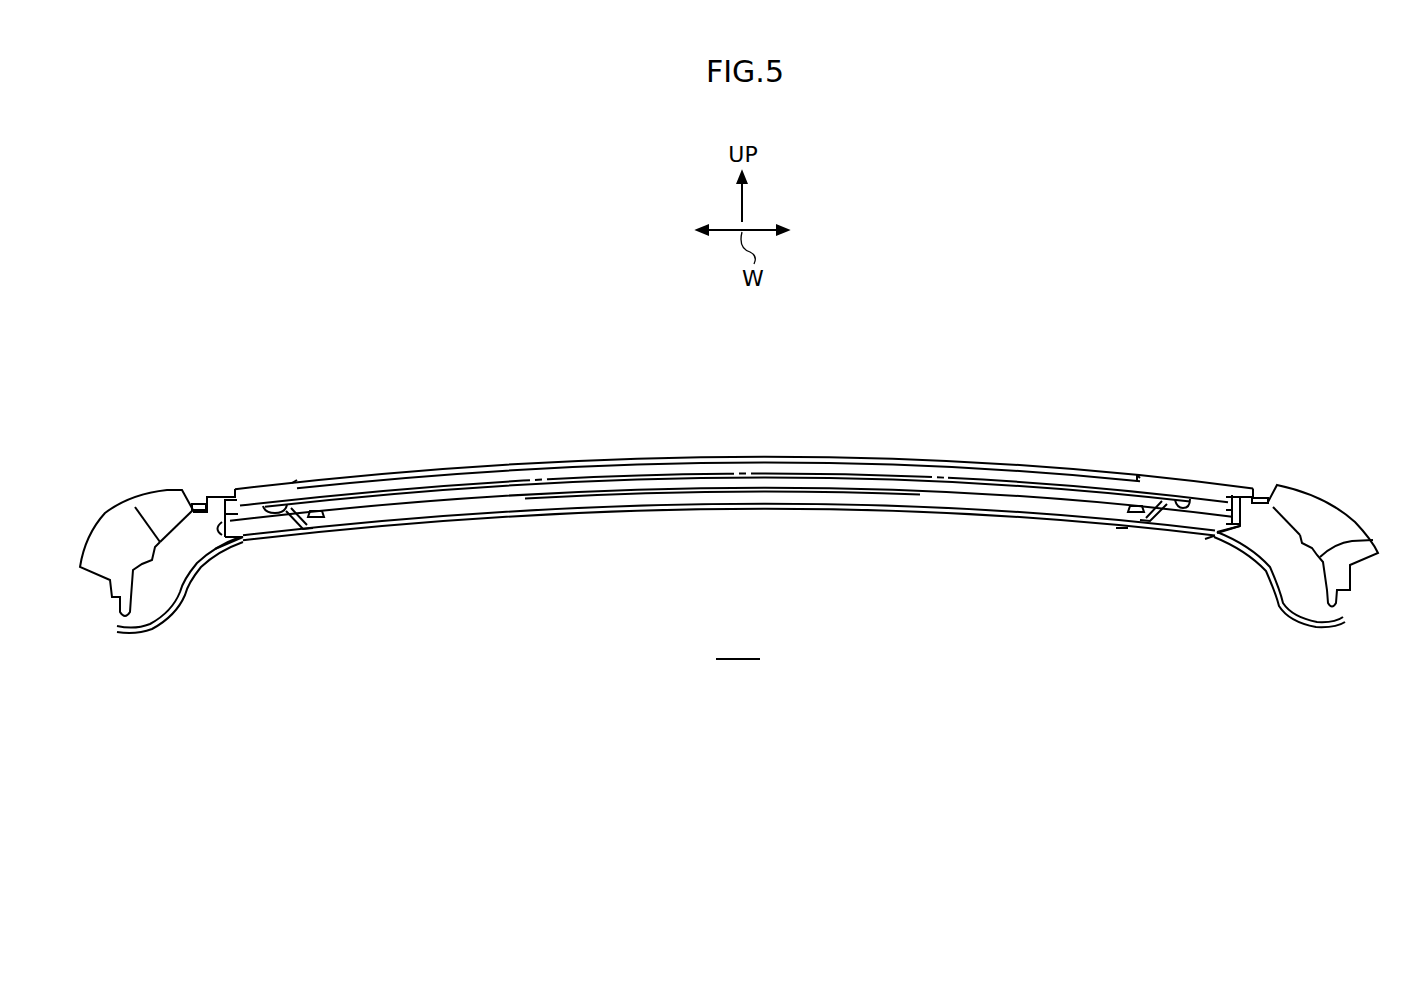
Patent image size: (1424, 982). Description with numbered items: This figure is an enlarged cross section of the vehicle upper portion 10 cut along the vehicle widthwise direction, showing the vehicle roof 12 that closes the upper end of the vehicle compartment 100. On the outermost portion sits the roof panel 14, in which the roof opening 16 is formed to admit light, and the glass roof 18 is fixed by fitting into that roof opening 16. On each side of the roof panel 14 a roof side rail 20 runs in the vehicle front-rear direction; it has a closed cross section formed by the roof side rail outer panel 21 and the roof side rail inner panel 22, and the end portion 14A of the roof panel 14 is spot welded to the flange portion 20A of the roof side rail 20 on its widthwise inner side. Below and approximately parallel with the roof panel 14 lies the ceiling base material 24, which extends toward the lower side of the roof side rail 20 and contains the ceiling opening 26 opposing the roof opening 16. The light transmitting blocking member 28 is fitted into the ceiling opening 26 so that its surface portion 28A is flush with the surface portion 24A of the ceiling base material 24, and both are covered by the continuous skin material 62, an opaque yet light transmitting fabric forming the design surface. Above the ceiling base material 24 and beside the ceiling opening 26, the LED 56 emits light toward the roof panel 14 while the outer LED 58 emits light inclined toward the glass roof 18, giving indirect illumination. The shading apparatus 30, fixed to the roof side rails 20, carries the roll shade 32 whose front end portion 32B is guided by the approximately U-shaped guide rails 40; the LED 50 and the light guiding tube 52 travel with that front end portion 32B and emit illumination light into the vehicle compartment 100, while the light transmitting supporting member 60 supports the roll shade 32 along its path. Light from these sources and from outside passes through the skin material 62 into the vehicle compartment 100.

The vehicle upper portion 10 is at (1336, 446).
The vehicle roof 12 is at (1040, 537).
The roof panel 14 is at (1217, 477).
The end portion 14A is at (238, 542).
The roof opening 16 is at (1137, 477).
The glass roof 18 is at (1000, 462).
The roof side rail 20 is at (101, 510).
The flange portion 20A is at (195, 505).
The roof side rail outer panel 21 is at (165, 491).
The roof side rail inner panel 22 is at (160, 537).
The ceiling base material 24 is at (1210, 540).
The surface portion 24A is at (1195, 540).
The ceiling opening 26 is at (1122, 528).
The blocking member 28 is at (918, 513).
The surface portion 28A is at (962, 513).
The shading apparatus 30 is at (750, 461).
The roll shade 32 is at (774, 472).
The front end portion 32B is at (826, 460).
The guide rail 40 is at (205, 512).
The LED 50 is at (263, 505).
The light guiding tube 52 is at (880, 488).
The LED 56 is at (325, 514).
The LED 58 is at (300, 508).
The supporting member 60 is at (780, 490).
The skin material 62 is at (848, 512).
The vehicle compartment 100 is at (737, 647).